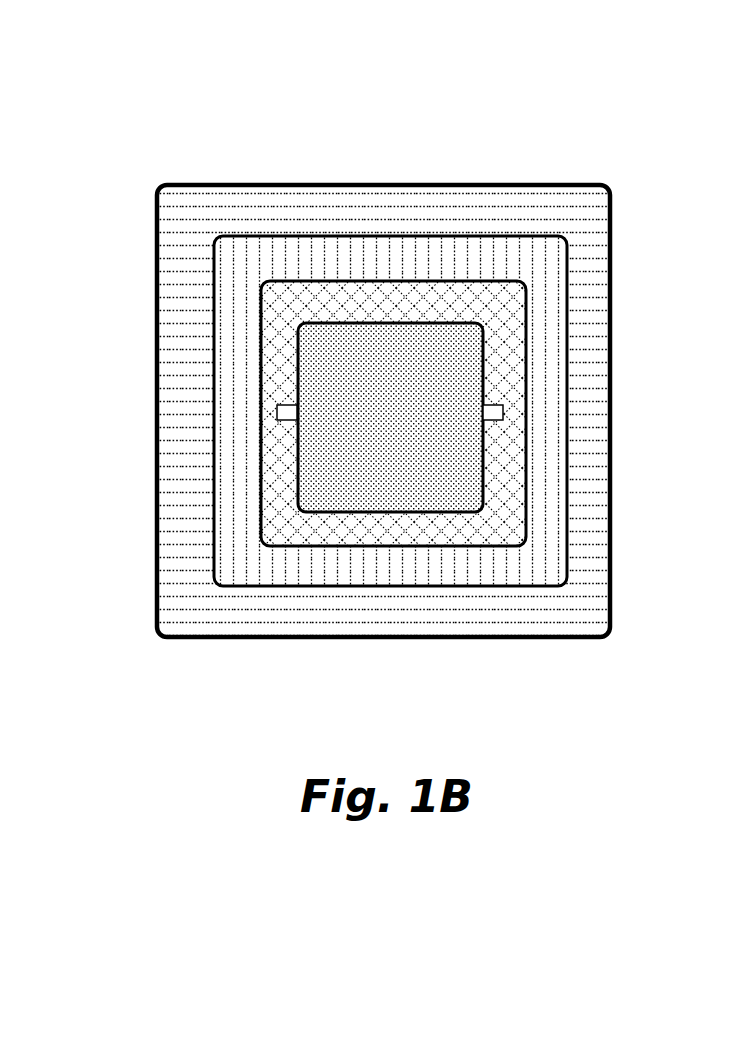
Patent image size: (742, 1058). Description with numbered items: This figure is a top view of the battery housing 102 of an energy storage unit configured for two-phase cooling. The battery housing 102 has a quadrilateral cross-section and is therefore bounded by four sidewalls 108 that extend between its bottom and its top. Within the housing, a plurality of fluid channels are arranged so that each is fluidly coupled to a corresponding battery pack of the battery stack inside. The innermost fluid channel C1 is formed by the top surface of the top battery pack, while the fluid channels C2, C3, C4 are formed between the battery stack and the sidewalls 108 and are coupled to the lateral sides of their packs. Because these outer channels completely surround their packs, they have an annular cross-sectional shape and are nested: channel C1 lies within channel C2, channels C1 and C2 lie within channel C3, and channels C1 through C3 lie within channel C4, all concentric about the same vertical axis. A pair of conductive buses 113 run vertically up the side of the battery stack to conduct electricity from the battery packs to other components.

The battery housing 102 is at (490, 101).
The sidewalls 108 is at (391, 411).
The conductive buses 113 is at (297, 414).
The fluid channel C1 is at (390, 417).
The fluid channel C2 is at (393, 413).
The fluid channel C3 is at (390, 411).
The fluid channel C4 is at (383, 411).